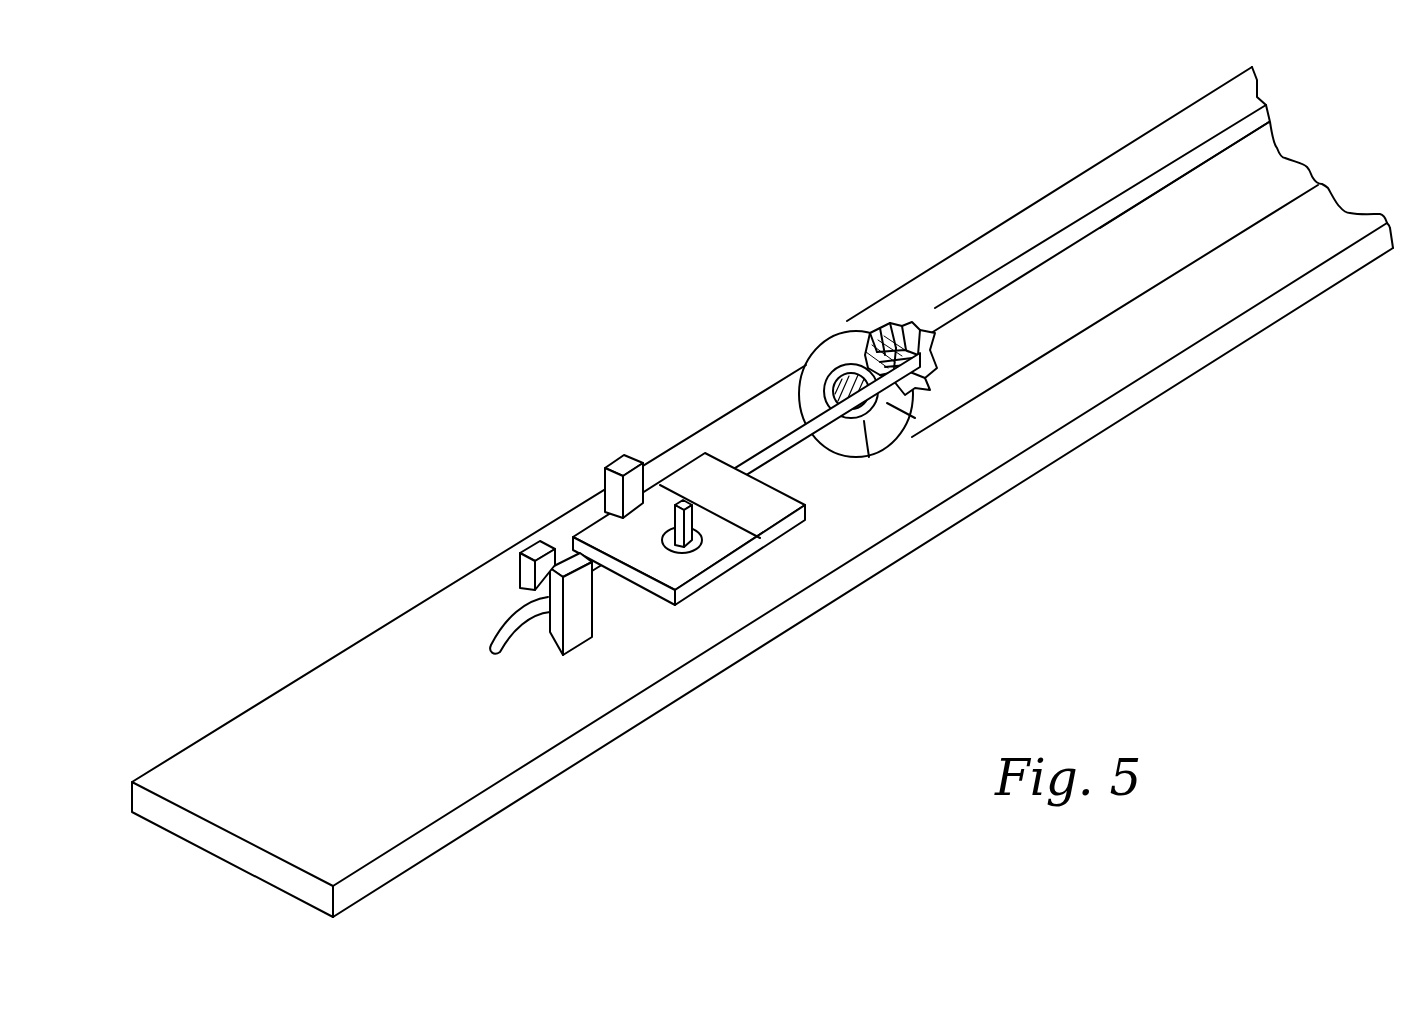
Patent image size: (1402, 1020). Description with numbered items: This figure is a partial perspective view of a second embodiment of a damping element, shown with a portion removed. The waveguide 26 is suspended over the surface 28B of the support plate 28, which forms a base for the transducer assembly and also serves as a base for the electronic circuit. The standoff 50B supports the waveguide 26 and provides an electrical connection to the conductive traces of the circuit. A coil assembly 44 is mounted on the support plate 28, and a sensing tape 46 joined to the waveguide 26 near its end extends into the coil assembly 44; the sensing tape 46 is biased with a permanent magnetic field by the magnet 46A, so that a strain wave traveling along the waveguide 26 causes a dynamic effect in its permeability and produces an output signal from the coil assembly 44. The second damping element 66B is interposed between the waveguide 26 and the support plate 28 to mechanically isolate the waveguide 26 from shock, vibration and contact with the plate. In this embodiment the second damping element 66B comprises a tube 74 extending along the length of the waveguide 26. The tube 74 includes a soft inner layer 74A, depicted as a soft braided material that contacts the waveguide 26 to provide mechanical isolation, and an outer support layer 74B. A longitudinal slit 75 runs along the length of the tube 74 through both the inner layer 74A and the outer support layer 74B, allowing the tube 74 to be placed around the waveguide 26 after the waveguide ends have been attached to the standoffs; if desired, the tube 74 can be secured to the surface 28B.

The support plate 28 is at (1115, 400).
The surface of the support plate 28B is at (1240, 290).
The tube 74 is at (1080, 194).
The longitudinal slit 75 is at (1207, 151).
The inner layer 74A is at (880, 458).
The outer support layer 74B is at (858, 323).
The second damping element 66B is at (858, 281).
The waveguide 26 is at (778, 434).
The coil assembly 44 is at (645, 600).
The sensing tape 46 is at (683, 548).
The magnet 46A is at (625, 457).
The standoff 50B is at (533, 548).